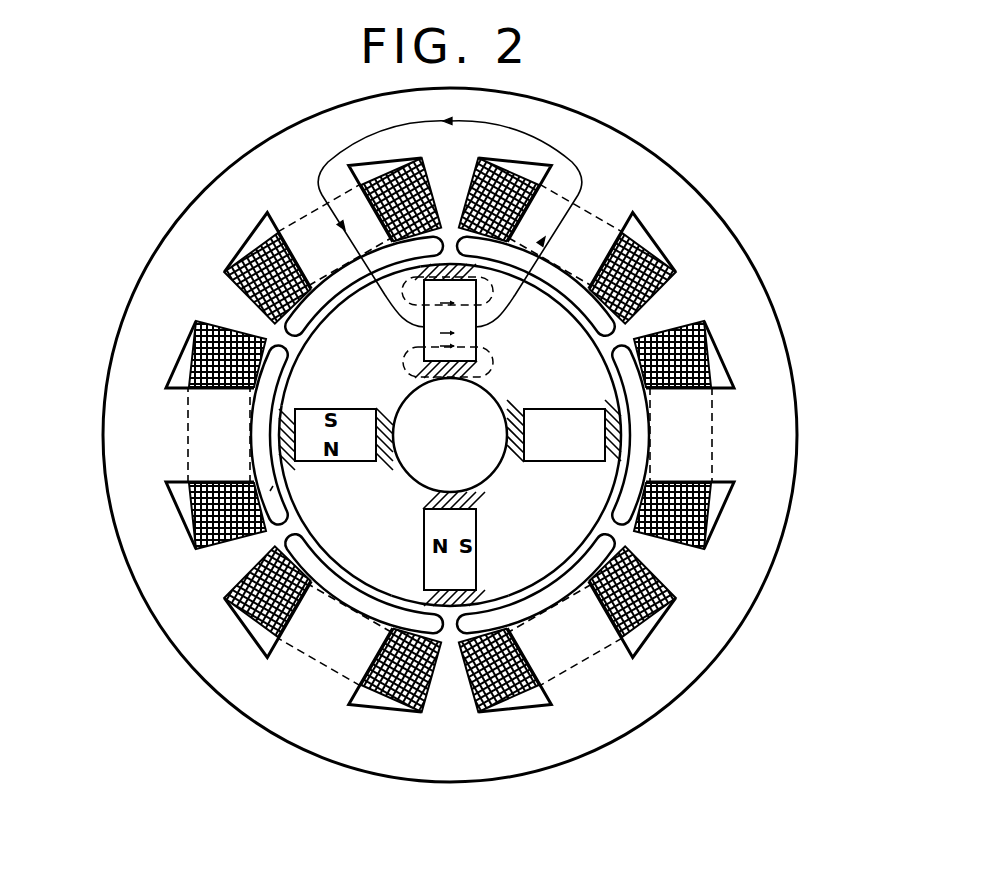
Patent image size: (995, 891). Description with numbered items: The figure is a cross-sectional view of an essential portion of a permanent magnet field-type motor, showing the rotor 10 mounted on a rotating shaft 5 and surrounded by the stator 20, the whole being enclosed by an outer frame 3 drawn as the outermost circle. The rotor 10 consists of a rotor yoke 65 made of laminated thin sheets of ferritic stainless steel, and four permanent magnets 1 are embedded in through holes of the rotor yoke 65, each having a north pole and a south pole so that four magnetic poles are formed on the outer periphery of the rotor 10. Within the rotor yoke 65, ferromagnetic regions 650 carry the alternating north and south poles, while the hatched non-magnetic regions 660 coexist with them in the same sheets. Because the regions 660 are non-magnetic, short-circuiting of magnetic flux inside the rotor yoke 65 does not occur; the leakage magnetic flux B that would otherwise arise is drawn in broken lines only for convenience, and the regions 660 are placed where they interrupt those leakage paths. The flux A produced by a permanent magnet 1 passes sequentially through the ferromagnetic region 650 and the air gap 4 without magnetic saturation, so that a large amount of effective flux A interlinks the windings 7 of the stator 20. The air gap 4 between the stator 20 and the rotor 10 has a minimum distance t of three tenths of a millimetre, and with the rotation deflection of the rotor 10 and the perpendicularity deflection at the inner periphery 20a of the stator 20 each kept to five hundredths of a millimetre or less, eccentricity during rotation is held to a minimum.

The permanent magnet 1 is at (544, 465).
The stator housing / outer yoke 3 is at (772, 337).
The air gap 4 is at (628, 443).
The rotating shaft 5 is at (413, 468).
The windings 7 is at (646, 260).
The rotor 10 is at (362, 588).
The stator 20 is at (225, 654).
The inner periphery of the stator 20a is at (495, 300).
The rotor yoke 65 is at (534, 551).
The ferromagnetic regions 650 is at (345, 306).
The non-magnetic regions 660 is at (453, 607).
The flux A is at (572, 152).
The leakage magnetic flux B is at (497, 352).
The minimum distance of the air gap t is at (270, 491).